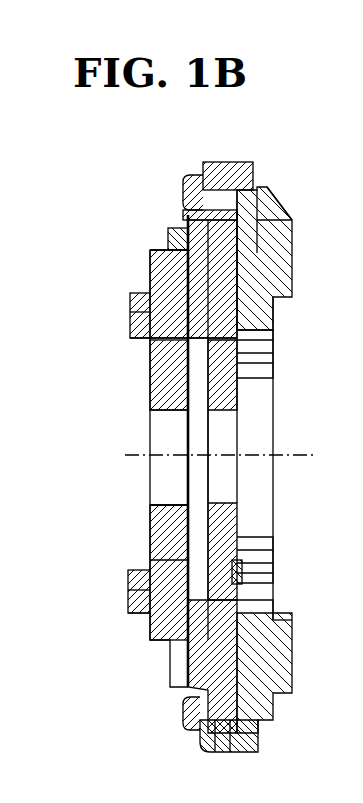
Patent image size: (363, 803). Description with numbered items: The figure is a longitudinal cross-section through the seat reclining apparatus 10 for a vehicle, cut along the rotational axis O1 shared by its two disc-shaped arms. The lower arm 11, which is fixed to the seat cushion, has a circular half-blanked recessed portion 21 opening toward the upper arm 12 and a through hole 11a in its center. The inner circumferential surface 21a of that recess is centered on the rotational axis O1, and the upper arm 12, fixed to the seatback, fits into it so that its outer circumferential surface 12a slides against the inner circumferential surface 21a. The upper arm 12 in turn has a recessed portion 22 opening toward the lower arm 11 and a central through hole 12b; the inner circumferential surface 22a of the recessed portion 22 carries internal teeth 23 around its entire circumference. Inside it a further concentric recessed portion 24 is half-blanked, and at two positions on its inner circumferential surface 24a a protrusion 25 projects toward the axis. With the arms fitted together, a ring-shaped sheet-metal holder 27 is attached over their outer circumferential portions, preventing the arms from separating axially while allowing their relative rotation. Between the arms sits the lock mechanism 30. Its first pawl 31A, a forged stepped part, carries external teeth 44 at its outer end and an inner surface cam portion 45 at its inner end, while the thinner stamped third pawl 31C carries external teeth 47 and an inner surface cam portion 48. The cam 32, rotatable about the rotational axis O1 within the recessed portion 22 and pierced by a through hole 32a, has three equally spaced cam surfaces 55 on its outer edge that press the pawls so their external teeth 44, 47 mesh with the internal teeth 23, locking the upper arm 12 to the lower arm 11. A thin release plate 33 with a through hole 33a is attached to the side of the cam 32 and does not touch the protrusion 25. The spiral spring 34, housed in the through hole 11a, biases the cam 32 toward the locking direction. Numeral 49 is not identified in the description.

The seat reclining apparatus 10 is at (112, 195).
The lower arm 11 is at (292, 257).
The through hole 11a is at (273, 337).
The upper arm 12 is at (150, 368).
The outer circumferential surface 12a is at (246, 154).
The through hole 12b is at (150, 505).
The recessed portion 21 is at (184, 220).
The inner circumferential surface 21a is at (197, 183).
The recessed portion 22 is at (291, 666).
The inner circumferential surface 22a is at (184, 703).
The internal teeth 23 is at (170, 235).
The recessed portion 24 is at (168, 642).
The inner circumferential surface 24a is at (150, 258).
The protrusion 25 is at (172, 671).
The holder 27 is at (224, 173).
The lock mechanism 30 is at (277, 221).
The first pawl 31A is at (266, 312).
The third pawl 31C is at (273, 607).
The cam 32 is at (237, 408).
The through hole 32a is at (237, 494).
The release plate 33 is at (150, 560).
The through hole 33a is at (217, 473).
The spiral spring 34 is at (270, 544).
The external teeth 44 is at (272, 208).
The inner surface cam portion 45 is at (150, 340).
The external teeth 47 is at (230, 753).
The inner surface cam portion 48 is at (240, 560).
The lower flange 49 is at (128, 612).
The cam surface 55 is at (130, 304).
The rotational axis O1 is at (231, 456).